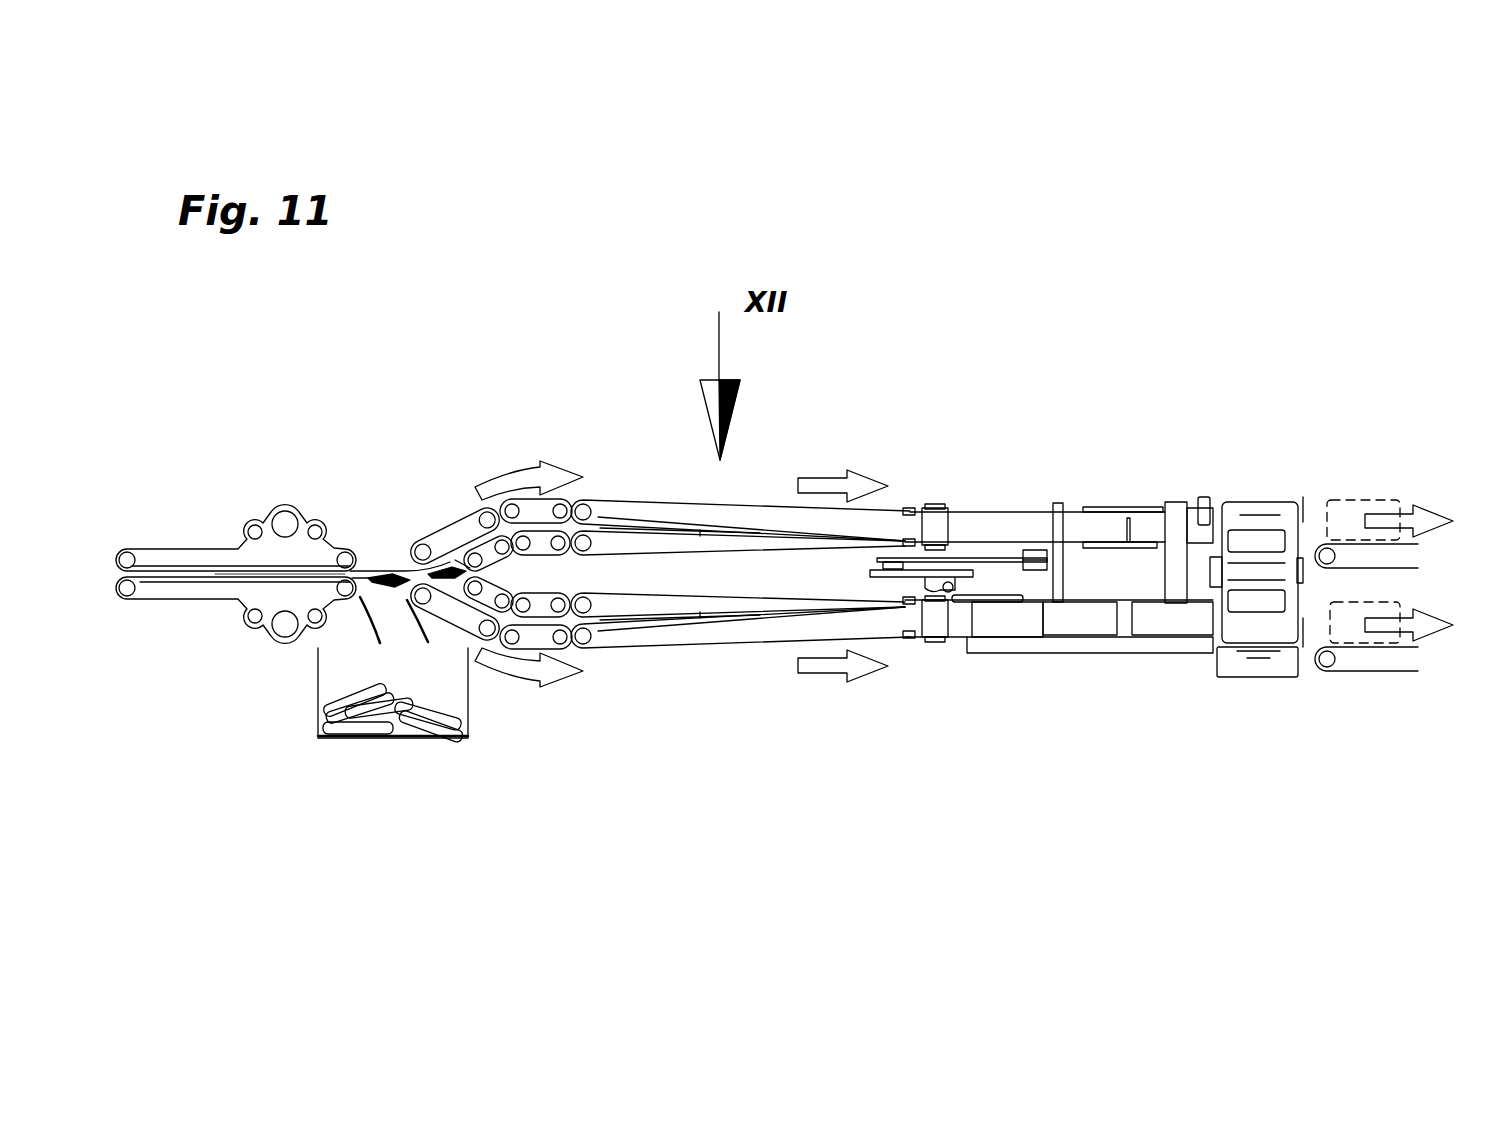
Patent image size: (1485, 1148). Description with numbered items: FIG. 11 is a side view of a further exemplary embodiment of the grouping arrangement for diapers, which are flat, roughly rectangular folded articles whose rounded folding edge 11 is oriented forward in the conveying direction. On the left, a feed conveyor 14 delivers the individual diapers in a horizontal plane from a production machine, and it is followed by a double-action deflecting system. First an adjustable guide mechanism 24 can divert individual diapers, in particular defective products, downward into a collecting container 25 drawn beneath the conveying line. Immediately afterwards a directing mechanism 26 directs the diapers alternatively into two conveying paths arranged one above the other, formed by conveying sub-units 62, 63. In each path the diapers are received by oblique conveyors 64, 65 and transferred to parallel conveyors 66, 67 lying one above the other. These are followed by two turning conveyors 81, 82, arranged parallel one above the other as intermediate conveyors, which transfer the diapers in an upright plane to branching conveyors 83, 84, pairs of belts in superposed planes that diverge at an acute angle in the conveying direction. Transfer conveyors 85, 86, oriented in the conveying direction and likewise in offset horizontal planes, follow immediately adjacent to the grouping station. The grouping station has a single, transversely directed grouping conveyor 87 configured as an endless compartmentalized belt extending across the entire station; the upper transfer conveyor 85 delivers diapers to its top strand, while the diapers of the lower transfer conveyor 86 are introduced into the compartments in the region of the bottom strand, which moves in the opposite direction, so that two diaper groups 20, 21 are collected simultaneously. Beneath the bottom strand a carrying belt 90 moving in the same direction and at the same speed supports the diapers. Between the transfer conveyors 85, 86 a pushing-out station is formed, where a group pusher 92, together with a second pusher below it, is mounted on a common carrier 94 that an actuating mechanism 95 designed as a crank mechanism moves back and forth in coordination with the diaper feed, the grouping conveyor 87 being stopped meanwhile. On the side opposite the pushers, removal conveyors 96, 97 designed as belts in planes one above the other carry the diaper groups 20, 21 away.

The folding edge 11 is at (213, 572).
The feed conveyor 14 is at (208, 510).
The diaper group 20 is at (1380, 500).
The diaper group 21 is at (1342, 630).
The guide mechanism 24 is at (393, 562).
The collecting container 25 is at (300, 702).
The directing mechanism 26 is at (457, 557).
The conveying sub-unit 62 is at (498, 446).
The conveying sub-unit 63 is at (527, 706).
The oblique conveyor 64 is at (420, 518).
The oblique conveyor 65 is at (409, 735).
The parallel conveyor 66 is at (577, 497).
The parallel conveyor 67 is at (580, 657).
The turning conveyor 81 is at (738, 492).
The turning conveyor 82 is at (722, 665).
The branching conveyor 83 is at (1005, 497).
The branching conveyor 84 is at (957, 617).
The transfer conveyor 85 is at (1180, 487).
The transfer conveyor 86 is at (1167, 653).
The grouping conveyor 87 is at (1267, 543).
The carrying belt 90 is at (1258, 670).
The group pusher 92 is at (1203, 497).
The carrier 94 is at (1058, 503).
The actuating mechanism 95 is at (970, 555).
The removal conveyor 96 is at (1383, 570).
The removal conveyor 97 is at (1387, 675).